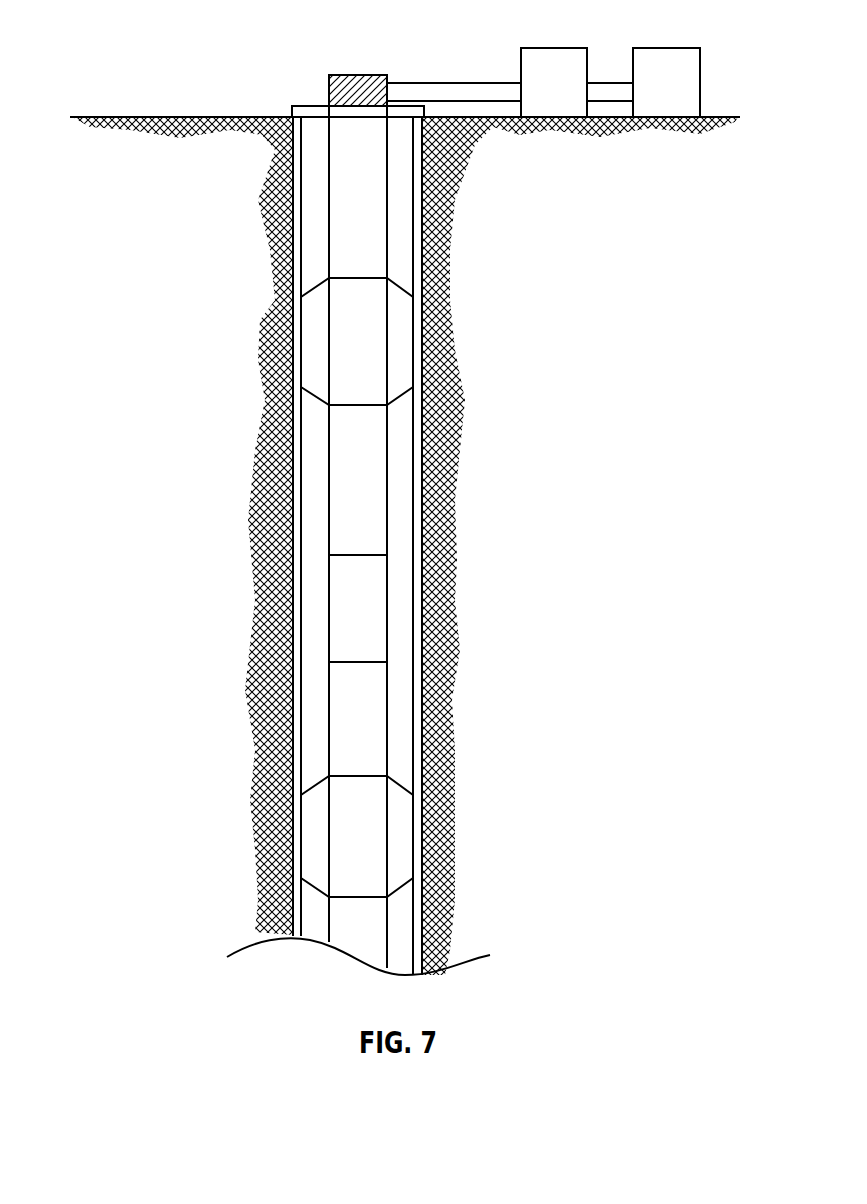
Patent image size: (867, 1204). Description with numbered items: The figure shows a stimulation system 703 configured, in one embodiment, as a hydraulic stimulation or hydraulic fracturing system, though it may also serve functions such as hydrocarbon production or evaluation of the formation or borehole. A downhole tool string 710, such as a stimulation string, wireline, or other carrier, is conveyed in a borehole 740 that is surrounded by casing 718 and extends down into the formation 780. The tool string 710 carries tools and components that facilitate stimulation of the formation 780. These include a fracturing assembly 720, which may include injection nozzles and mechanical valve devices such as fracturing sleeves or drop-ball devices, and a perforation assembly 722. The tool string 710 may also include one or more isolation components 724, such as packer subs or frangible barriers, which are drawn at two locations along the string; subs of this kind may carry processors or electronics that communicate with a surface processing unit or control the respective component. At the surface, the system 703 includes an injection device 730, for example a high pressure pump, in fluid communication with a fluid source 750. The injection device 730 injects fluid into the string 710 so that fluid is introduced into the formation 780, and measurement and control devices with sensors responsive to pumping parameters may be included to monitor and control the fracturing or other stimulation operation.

The stimulation system 703 is at (116, 113).
The downhole tool string 710 is at (338, 924).
The casing 718 is at (413, 228).
The fracturing assembly 720 is at (388, 590).
The perforation assembly 722 is at (388, 717).
The isolation component 724 is at (405, 347).
The injection device 730 is at (575, 48).
The borehole 740 is at (430, 197).
The fluid source 750 is at (683, 48).
The formation 780 is at (655, 410).